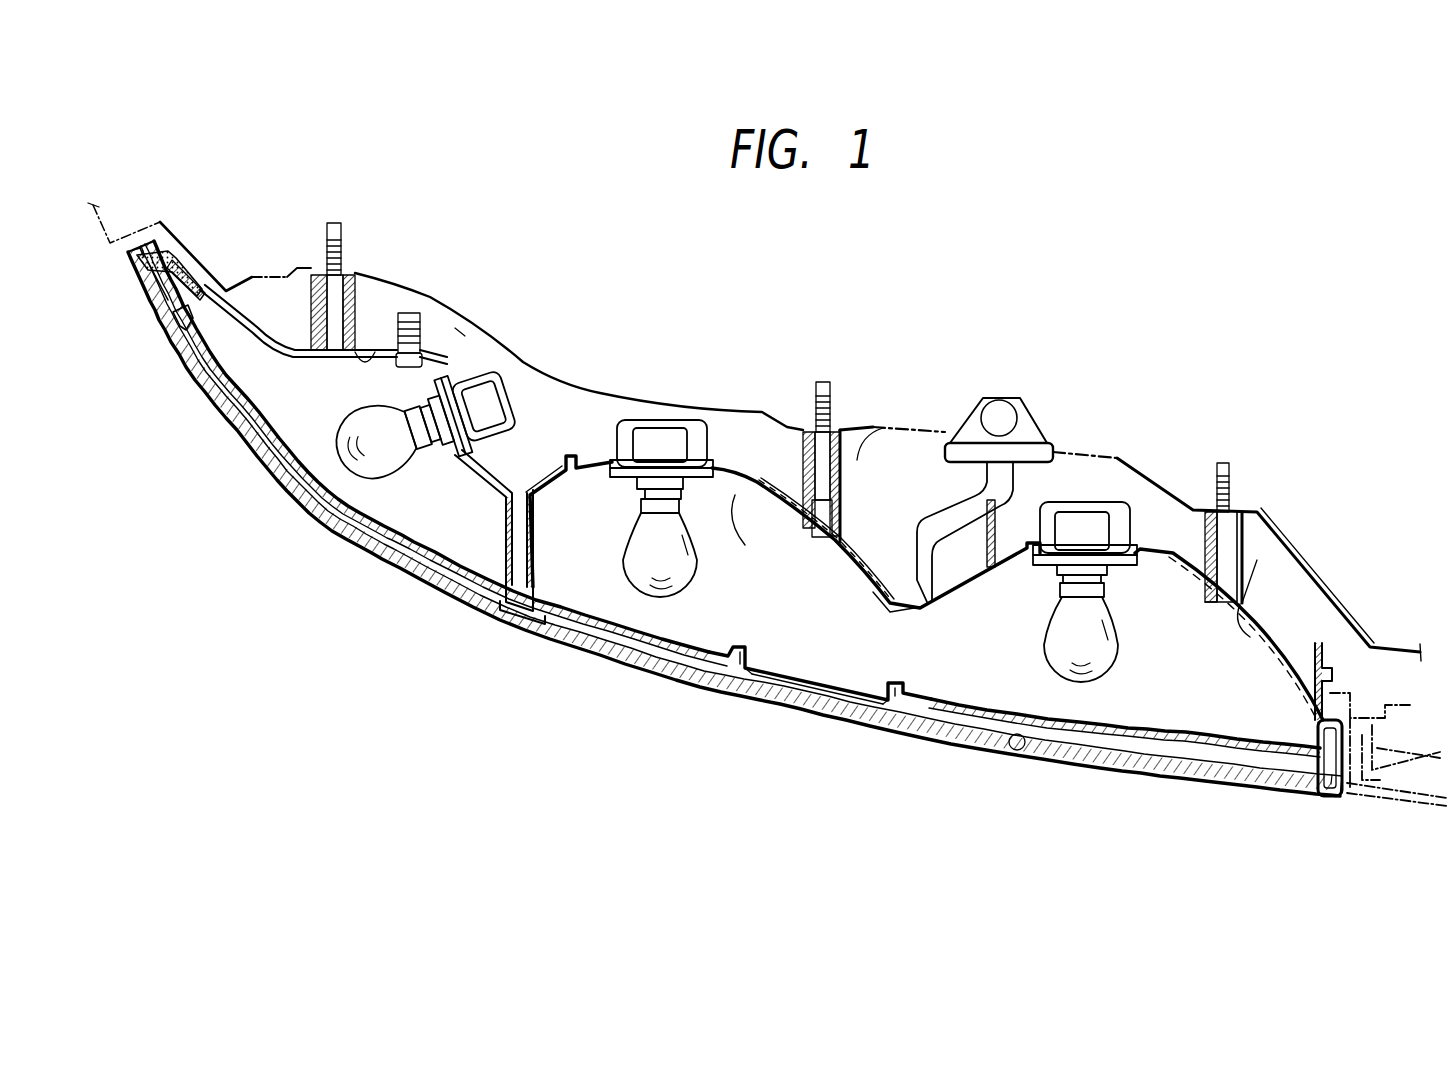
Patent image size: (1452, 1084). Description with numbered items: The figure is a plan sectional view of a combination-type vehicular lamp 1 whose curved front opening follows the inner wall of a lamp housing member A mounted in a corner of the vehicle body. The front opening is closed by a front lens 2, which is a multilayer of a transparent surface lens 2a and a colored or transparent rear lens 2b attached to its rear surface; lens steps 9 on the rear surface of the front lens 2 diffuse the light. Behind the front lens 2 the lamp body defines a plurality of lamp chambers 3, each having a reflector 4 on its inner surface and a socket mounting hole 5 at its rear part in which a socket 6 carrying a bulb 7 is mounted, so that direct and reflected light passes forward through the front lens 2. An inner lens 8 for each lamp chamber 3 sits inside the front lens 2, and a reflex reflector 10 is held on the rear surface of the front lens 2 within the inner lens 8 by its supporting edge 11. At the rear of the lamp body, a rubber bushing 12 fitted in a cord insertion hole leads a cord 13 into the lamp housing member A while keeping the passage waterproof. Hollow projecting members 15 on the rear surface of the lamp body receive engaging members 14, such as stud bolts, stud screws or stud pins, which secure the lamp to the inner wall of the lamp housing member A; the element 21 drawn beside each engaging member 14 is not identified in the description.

The vehicular lamp 1 is at (587, 445).
The front lens 2 is at (650, 751).
The transparent surface lens 2a is at (643, 675).
The rear lens 2b is at (622, 670).
The lamp chamber 3 is at (385, 505).
The reflector 4 is at (365, 315).
The socket mounting hole 5 is at (485, 446).
The socket 6 is at (493, 387).
The bulb 7 is at (322, 460).
The inner lens 8 is at (455, 568).
The lens step 9 is at (1023, 753).
The reflex reflector 10 is at (773, 700).
The supporting edge 11 is at (900, 707).
The bushing 12 is at (1035, 450).
The cord 13 is at (927, 507).
The engaging member 14 is at (310, 256).
The hollow projecting member 15 is at (365, 360).
The nut 21 is at (345, 275).
The lamp housing member A is at (460, 332).